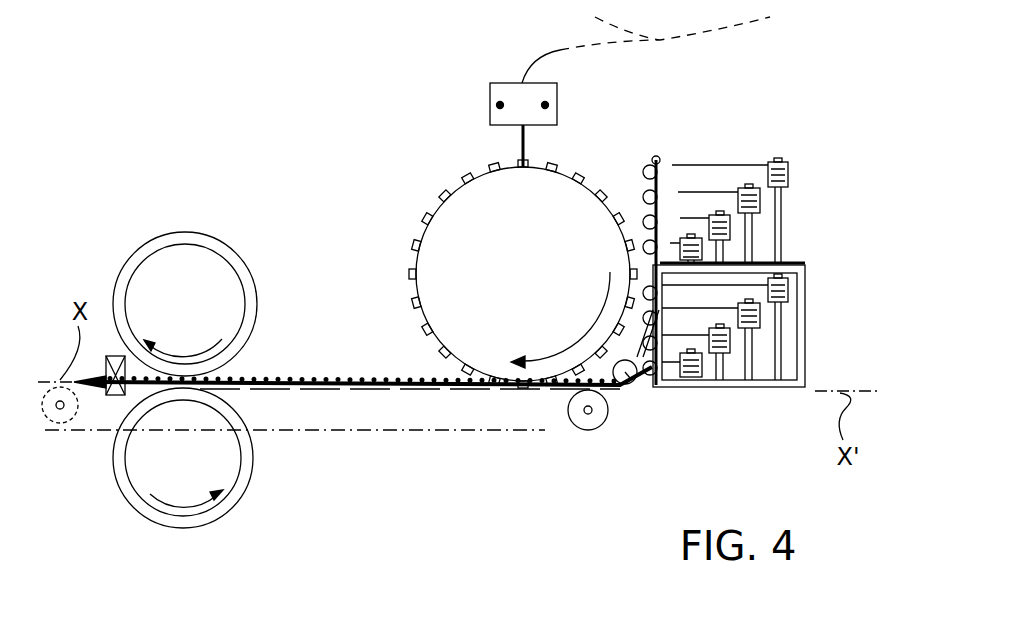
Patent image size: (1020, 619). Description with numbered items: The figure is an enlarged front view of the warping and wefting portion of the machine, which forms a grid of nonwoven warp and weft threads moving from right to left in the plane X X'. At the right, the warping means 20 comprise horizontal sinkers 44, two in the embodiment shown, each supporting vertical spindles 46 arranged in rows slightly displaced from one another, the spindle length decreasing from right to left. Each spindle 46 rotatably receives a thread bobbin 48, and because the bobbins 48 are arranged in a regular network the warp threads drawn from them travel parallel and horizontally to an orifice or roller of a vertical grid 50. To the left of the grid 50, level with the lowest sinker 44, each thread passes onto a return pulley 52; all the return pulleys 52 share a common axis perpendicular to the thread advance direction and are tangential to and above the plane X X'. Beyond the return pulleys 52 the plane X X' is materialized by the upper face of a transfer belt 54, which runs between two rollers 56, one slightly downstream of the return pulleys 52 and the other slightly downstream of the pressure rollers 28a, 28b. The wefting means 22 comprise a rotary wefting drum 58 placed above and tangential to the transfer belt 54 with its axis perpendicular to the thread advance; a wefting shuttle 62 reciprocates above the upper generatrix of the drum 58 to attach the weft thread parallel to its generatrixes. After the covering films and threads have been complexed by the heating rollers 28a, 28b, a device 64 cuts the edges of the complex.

The warping means 20 is at (718, 138).
The wefting means 22 is at (424, 184).
The pressure roller 28a is at (170, 235).
The pressure roller 28b is at (133, 477).
The horizontal sinker 44 is at (797, 266).
The vertical spindle 46 is at (778, 250).
The thread bobbin 48 is at (750, 186).
The vertical grid 50 is at (656, 157).
The return pulley 52 is at (626, 386).
The transfer belt 54 is at (340, 432).
The roller 56 is at (62, 424).
The rotary wefting drum 58 is at (460, 257).
The wefting shuttle 62 is at (490, 90).
The cutting device 64 is at (115, 357).